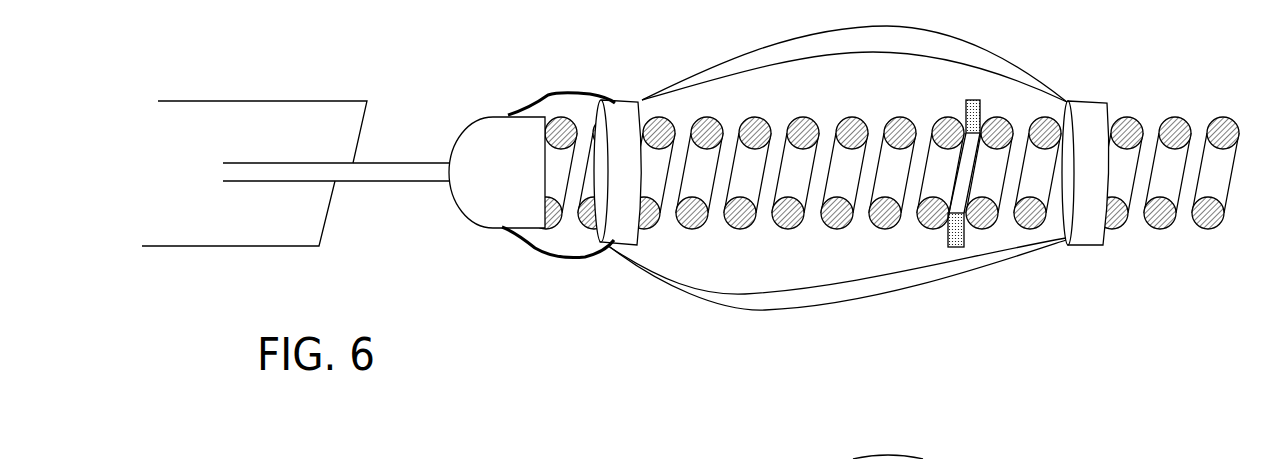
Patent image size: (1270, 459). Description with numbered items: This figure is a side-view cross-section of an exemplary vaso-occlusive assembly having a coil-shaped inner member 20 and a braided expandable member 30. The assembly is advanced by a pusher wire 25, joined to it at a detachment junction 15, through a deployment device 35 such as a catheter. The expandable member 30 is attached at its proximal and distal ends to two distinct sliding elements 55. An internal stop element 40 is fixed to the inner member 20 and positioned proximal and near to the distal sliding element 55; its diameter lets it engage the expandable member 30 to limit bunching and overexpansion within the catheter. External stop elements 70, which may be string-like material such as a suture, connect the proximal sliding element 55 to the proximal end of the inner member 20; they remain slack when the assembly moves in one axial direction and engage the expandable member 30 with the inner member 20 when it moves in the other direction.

The detachment junction 15 is at (448, 182).
The inner member 20 is at (803, 117).
The pusher wire 25 is at (383, 163).
The expandable member 30 is at (740, 68).
The deployment device 35 is at (240, 230).
The internal stop element 40 is at (966, 100).
The sliding elements 55 is at (623, 103).
The external stop elements 70 is at (542, 100).